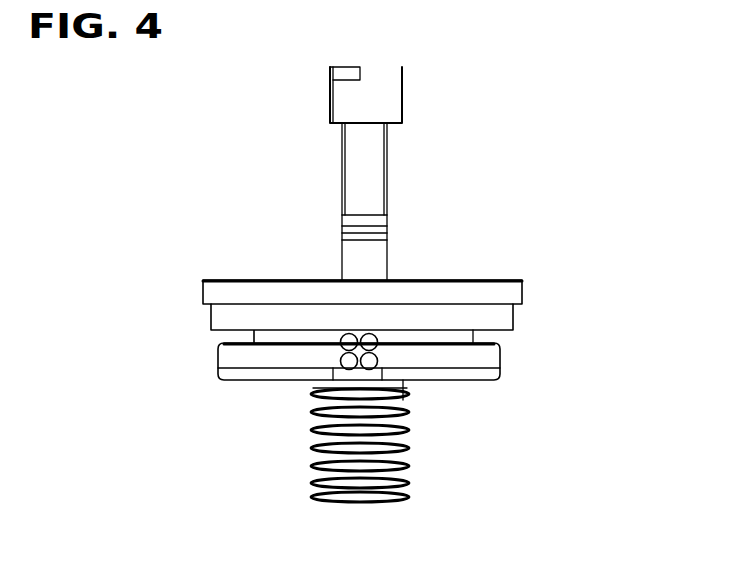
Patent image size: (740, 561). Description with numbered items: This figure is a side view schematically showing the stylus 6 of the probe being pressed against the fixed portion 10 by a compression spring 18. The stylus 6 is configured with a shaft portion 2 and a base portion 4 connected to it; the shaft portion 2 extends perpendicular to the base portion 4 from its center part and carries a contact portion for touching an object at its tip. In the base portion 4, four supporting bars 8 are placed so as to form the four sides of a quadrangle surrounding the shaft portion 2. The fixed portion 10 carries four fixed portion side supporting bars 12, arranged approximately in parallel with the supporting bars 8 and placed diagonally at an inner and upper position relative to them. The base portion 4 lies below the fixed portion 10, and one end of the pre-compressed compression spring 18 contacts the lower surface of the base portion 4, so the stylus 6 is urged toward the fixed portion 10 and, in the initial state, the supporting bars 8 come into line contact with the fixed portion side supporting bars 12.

The shaft portion 2 is at (358, 233).
The base portion 4 is at (280, 372).
The stylus 6 is at (112, 262).
The supporting bars 8 is at (502, 374).
The fixed portion 10 is at (462, 301).
The fixed portion side supporting bars 12 is at (462, 342).
The compression spring 18 is at (405, 488).